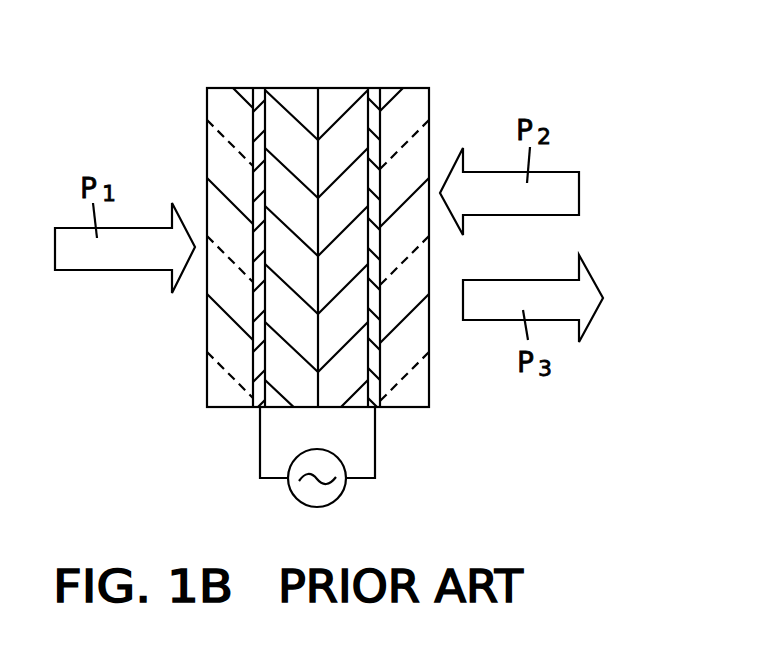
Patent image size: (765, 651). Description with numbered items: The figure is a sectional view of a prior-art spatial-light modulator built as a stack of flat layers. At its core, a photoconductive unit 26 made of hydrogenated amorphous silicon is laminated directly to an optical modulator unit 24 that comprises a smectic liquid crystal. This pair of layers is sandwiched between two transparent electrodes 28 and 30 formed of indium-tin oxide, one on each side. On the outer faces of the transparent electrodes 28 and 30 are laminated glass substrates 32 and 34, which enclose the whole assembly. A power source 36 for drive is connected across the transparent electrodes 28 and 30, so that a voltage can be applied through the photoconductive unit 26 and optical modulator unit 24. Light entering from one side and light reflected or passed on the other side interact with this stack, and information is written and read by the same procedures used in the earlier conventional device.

The optical modulator unit 24 is at (340, 97).
The photoconductive unit 26 is at (292, 98).
The transparent electrode 28 is at (263, 95).
The transparent electrode 30 is at (377, 108).
The glass substrate 32 is at (221, 100).
The glass substrate 34 is at (417, 98).
The power source 36 is at (307, 450).